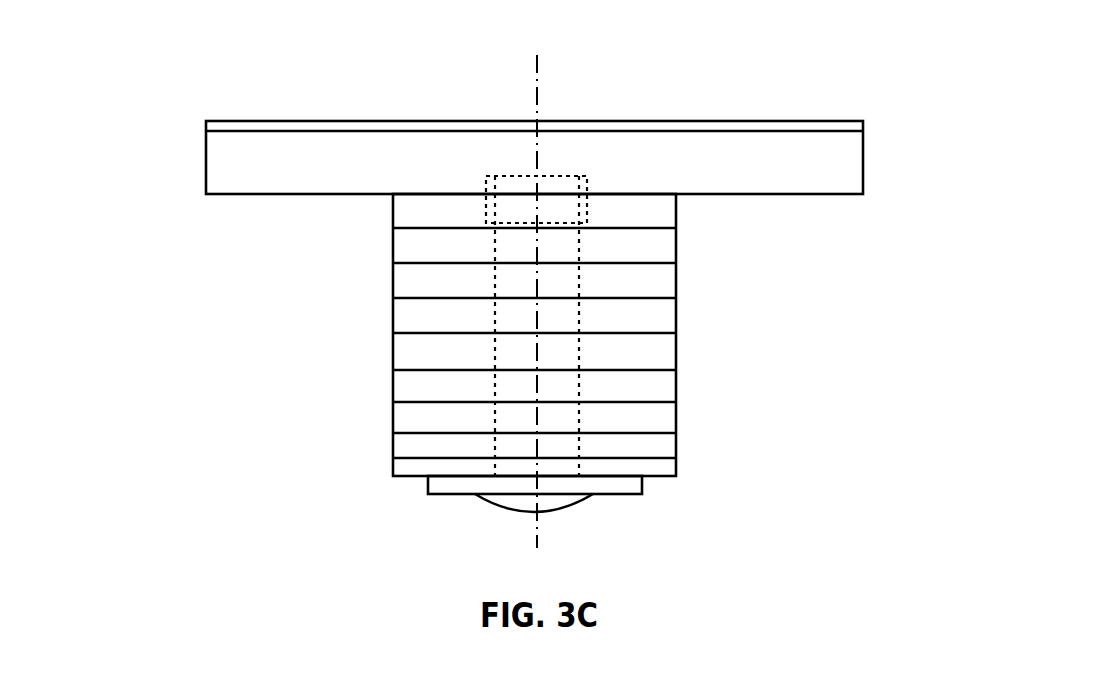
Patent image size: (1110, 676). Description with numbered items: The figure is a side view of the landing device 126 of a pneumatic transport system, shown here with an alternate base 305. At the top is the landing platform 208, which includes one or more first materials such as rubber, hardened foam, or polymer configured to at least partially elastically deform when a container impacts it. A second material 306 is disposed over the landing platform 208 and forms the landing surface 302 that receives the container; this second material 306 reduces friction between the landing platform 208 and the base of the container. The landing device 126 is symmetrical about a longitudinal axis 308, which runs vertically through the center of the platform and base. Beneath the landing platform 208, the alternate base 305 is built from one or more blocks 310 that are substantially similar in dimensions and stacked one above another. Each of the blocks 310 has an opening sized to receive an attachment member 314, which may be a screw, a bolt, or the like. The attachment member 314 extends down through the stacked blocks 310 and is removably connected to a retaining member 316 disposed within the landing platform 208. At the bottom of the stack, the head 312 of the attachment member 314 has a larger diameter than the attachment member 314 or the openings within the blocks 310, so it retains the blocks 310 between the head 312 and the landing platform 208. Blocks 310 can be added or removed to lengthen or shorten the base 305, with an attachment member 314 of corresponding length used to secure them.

The landing device 126 is at (180, 58).
The landing platform 208 is at (865, 167).
The landing surface 302 is at (608, 101).
The alternate base 305 is at (722, 353).
The second material 306 is at (772, 122).
The longitudinal axis 308 is at (536, 96).
The blocks 310 is at (398, 317).
The head 312 is at (642, 485).
The attachment member 314 is at (495, 388).
The retaining member 316 is at (486, 209).